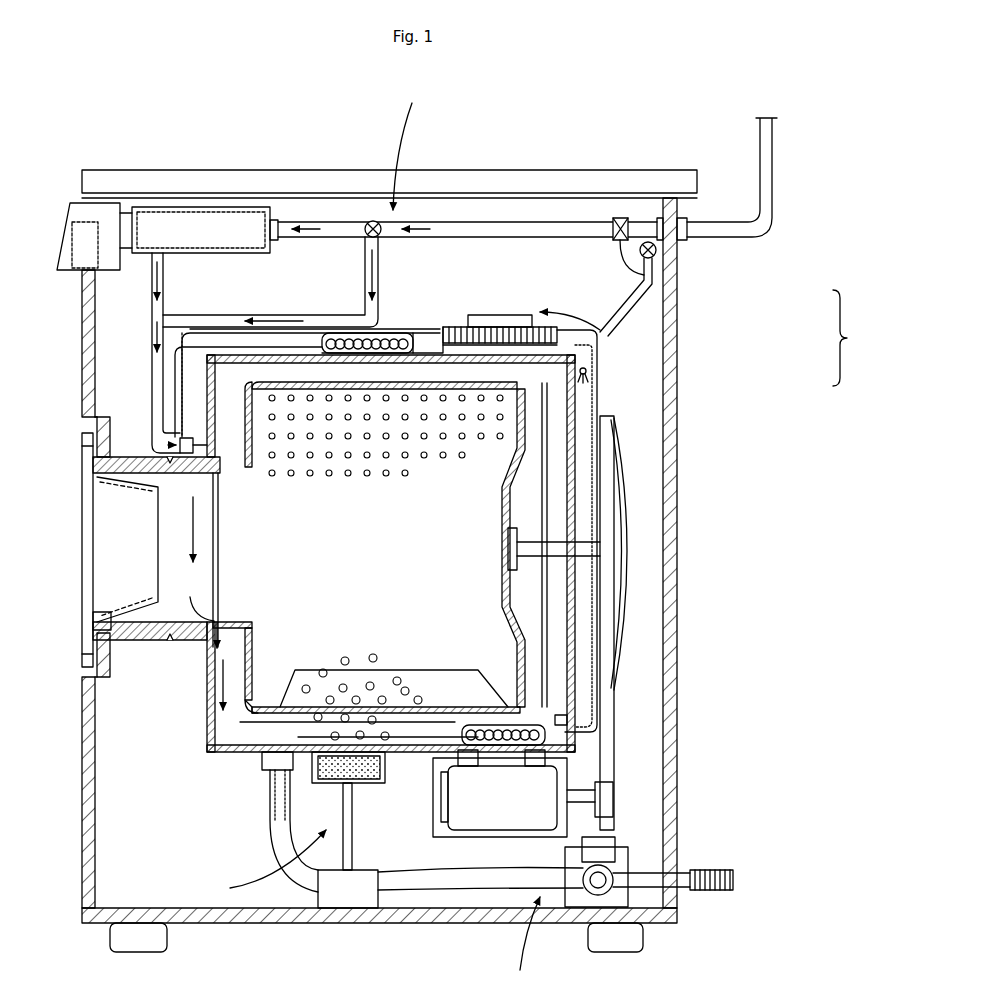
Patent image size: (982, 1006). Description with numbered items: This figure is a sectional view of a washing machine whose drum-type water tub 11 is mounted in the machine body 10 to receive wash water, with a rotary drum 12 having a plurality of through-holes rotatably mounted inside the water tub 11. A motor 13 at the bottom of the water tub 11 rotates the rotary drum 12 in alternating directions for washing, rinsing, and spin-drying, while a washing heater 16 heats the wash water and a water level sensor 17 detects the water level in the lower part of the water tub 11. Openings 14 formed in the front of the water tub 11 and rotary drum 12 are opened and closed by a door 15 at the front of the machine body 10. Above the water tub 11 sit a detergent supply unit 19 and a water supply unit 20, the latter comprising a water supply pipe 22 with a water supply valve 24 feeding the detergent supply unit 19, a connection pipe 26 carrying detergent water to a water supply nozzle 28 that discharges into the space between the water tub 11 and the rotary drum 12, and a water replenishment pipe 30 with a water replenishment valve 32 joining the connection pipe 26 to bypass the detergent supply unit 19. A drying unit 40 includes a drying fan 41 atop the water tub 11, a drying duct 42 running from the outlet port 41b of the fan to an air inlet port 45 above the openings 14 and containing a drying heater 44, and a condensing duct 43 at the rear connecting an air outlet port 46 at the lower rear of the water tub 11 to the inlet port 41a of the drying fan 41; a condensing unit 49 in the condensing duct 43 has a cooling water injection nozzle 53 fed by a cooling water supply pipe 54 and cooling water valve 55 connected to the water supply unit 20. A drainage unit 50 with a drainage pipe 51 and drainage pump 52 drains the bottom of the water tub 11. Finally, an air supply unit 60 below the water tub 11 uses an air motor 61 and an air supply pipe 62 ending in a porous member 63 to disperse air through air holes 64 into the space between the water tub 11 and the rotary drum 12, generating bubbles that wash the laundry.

The machine body 10 is at (125, 168).
The water tub 11 is at (207, 752).
The rotary drum 12 is at (244, 676).
The motor 13 is at (485, 812).
The openings 14 is at (97, 625).
The door 15 is at (110, 540).
The washing heater 16 is at (545, 740).
The water level sensor 17 is at (600, 686).
The detergent supply unit 19 is at (180, 212).
The water supply unit 20 is at (409, 146).
The water supply pipe 22 is at (520, 222).
The water supply valve 24 is at (652, 270).
The connection pipe 26 is at (152, 365).
The water supply nozzle 28 is at (193, 444).
The water replenishment pipe 30 is at (365, 270).
The water replenishment valve 32 is at (370, 220).
The drying unit 40 is at (560, 338).
The drying fan 41 is at (596, 358).
The inlet port 41a is at (588, 374).
The outlet port 41b is at (438, 330).
The drying duct 42 is at (160, 328).
The condensing duct 43 is at (600, 516).
The drying heater 44 is at (392, 336).
The air inlet port 45 is at (190, 473).
The air outlet port 46 is at (568, 722).
The condensing unit 49 is at (837, 338).
The drainage unit 50 is at (525, 943).
The drainage pipe 51 is at (427, 882).
The drainage pump 52 is at (625, 860).
The cooling water injection nozzle 53 is at (598, 350).
The cooling water supply pipe 54 is at (612, 322).
The cooling water valve 55 is at (657, 250).
The air supply unit 60 is at (265, 825).
The air motor 61 is at (347, 900).
The air supply pipe 62 is at (347, 804).
The porous member 63 is at (388, 776).
The air holes 64 is at (305, 737).